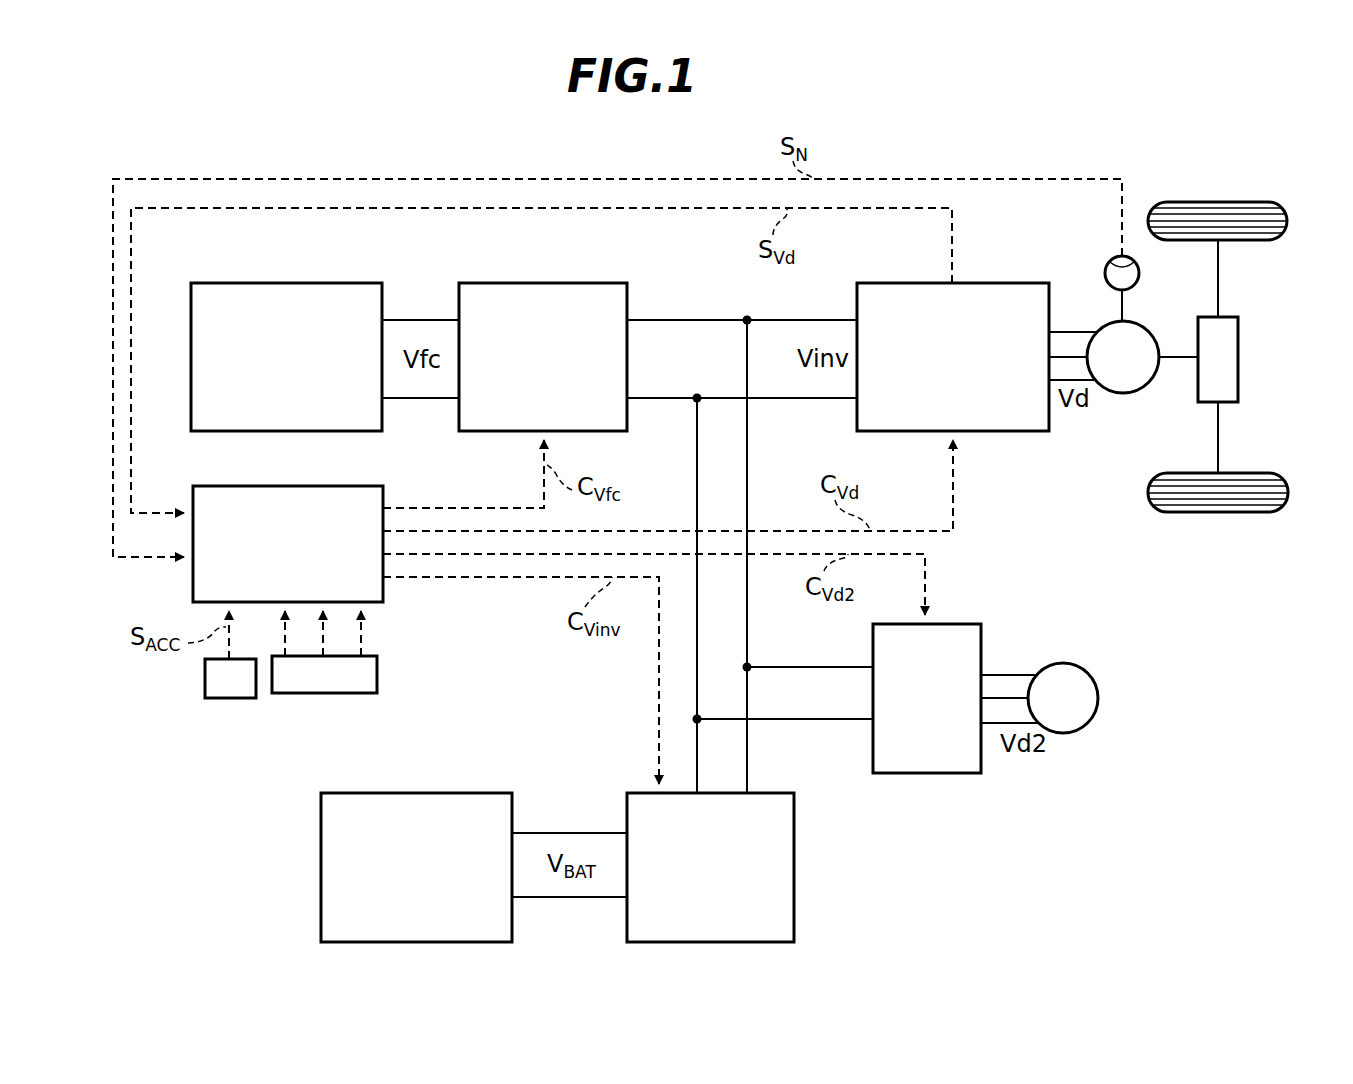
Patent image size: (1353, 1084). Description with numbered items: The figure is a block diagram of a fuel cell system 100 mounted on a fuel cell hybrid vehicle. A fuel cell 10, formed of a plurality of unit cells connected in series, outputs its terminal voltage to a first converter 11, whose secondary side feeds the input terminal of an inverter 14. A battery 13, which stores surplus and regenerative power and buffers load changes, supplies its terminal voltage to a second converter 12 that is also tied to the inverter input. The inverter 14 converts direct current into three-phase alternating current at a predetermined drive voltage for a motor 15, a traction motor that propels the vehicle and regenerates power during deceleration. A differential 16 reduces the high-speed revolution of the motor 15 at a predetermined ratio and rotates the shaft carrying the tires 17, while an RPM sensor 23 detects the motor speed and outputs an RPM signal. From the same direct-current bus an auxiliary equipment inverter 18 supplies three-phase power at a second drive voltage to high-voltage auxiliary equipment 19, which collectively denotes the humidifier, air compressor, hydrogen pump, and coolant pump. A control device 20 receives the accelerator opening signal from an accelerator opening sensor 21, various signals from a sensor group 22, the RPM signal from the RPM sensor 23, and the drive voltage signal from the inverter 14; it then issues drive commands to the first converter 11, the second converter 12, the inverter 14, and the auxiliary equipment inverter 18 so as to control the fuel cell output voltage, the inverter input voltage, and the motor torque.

The fuel cell 10 is at (318, 283).
The first converter 11 is at (544, 283).
The second converter 12 is at (794, 862).
The battery 13 is at (420, 793).
The inverter 14 is at (1007, 283).
The motor 15 is at (1130, 393).
The differential 16 is at (1225, 317).
The tire 17 is at (1218, 202).
The auxiliary equipment inverter 18 is at (962, 624).
The high-voltage auxiliary equipment 19 is at (1071, 665).
The control device 20 is at (383, 492).
The accelerator opening sensor 21 is at (232, 699).
The sensor group 22 is at (322, 694).
The RPM sensor 23 is at (1122, 256).
The fuel cell system 100 is at (1006, 927).